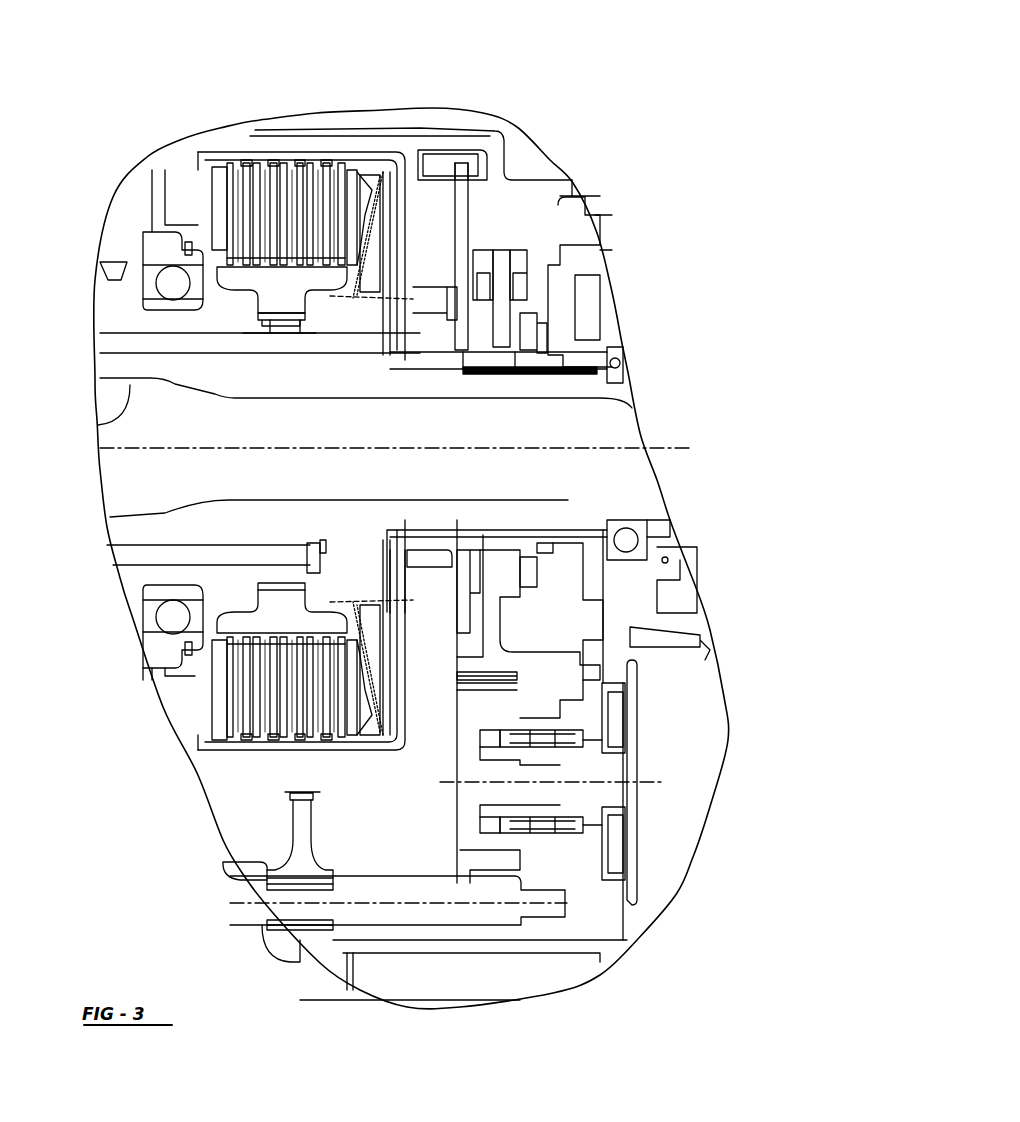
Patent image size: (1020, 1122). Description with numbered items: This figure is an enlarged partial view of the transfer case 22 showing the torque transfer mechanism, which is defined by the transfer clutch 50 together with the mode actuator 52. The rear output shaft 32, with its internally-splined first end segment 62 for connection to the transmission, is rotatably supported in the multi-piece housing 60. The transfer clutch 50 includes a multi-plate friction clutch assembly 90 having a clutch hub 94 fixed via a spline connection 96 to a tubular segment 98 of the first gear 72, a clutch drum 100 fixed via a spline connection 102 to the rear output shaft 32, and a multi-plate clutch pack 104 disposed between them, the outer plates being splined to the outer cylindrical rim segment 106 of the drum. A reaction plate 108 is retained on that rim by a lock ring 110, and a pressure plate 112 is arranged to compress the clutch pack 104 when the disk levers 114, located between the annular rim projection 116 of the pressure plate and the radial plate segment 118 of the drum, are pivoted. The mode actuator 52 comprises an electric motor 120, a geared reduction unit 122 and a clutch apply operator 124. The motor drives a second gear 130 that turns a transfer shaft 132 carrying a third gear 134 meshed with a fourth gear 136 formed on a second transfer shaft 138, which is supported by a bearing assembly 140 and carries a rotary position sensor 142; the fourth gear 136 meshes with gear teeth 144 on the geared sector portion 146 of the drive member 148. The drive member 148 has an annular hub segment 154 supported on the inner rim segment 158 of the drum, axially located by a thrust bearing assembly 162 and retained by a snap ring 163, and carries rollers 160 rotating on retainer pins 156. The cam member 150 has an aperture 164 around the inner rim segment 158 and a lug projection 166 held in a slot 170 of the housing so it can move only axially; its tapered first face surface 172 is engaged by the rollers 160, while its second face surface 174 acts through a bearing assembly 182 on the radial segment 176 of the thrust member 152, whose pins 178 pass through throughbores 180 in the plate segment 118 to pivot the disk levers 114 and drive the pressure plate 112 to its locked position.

The transfer case 22 is at (670, 77).
The rear output shaft 32 is at (214, 385).
The transfer clutch 50 is at (331, 130).
The mode actuator 52 is at (606, 928).
The housing 60 is at (428, 134).
The first end segment 62 is at (122, 410).
The first gear 72 is at (116, 300).
The multi-plate friction clutch assembly 90 is at (283, 151).
The clutch hub 94 is at (296, 298).
The spline connection 96 is at (285, 317).
The tubular segment 98 is at (178, 575).
The clutch drum 100 is at (240, 752).
The spline connection 102 is at (428, 385).
The multi-plate clutch pack 104 is at (232, 680).
The outer cylindrical rim segment 106 is at (233, 154).
The reaction plate 108 is at (217, 204).
The lock ring 110 is at (204, 723).
The pressure plate 112 is at (349, 172).
The disk levers 114 is at (385, 242).
The annular rim projection 116 is at (366, 703).
The radial plate segment 118 is at (418, 700).
The electric motor 120 is at (430, 1000).
The geared reduction unit 122 is at (416, 868).
The clutch apply operator 124 is at (538, 300).
The second gear 130 is at (300, 820).
The transfer shaft 132 is at (375, 888).
The third gear 134 is at (492, 930).
The fourth gear 136 is at (473, 706).
The second transfer shaft 138 is at (606, 798).
The bearing assembly 140 is at (548, 740).
The rotary position sensor 142 is at (613, 705).
The gear teeth 144 is at (492, 688).
The geared sector portion 146 is at (498, 650).
The drive member 148 is at (503, 557).
The cam member 150 is at (462, 553).
The thrust member 152 is at (430, 305).
The annular hub segment 154 is at (490, 558).
The retainer pins 156 is at (470, 262).
The inner rim segment 158 is at (515, 372).
The rollers 160 is at (520, 277).
The thrust bearing assembly 162 is at (525, 340).
The snap ring 163 is at (560, 540).
The aperture 164 is at (463, 376).
The lug projection 166 is at (460, 168).
The slot 170 is at (438, 165).
The first face surface 172 is at (492, 597).
The second face surface 174 is at (445, 257).
The radial segment 176 is at (440, 340).
The pins 178 is at (406, 572).
The throughbore 180 is at (388, 318).
The bearing assembly 182 is at (438, 545).